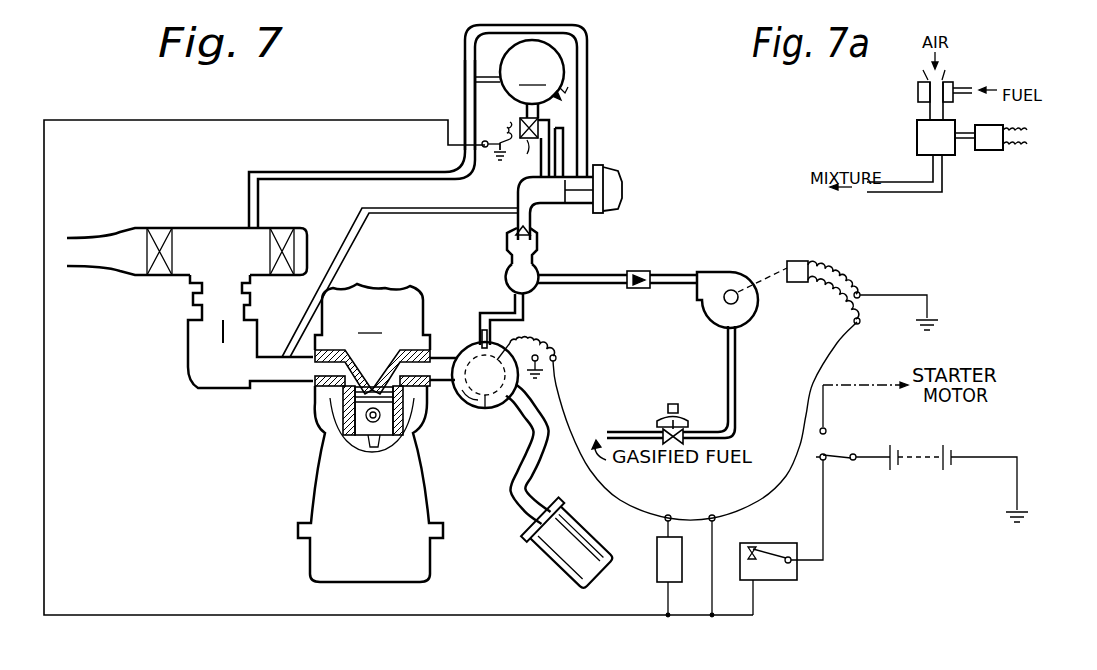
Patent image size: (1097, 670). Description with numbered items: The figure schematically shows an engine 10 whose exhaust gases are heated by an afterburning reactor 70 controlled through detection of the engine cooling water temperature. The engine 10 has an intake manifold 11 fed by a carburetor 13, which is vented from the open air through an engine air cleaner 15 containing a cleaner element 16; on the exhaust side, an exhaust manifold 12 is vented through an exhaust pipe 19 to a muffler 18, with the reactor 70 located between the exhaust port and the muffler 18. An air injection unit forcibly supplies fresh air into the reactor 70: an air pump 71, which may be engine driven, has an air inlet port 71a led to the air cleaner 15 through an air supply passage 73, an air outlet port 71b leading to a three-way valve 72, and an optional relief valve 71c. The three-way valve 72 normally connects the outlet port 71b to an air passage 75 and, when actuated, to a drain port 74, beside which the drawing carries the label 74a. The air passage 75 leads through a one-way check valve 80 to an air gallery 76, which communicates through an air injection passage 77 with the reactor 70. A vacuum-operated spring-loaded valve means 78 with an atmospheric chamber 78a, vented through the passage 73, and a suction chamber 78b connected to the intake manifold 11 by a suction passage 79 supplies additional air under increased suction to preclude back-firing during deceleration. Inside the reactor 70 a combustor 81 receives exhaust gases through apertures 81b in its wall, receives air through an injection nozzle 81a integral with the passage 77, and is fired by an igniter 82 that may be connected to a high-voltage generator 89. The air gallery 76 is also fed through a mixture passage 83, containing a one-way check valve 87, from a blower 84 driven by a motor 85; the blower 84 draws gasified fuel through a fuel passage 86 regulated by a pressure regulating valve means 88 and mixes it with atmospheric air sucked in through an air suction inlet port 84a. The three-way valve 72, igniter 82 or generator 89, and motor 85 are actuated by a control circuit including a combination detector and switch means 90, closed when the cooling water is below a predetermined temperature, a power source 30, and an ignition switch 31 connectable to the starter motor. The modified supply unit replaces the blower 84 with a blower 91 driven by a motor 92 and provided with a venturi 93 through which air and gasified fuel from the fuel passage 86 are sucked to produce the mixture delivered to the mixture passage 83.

In FIG. 7, the engine 10 is at (372, 317).
In FIG. 7, the intake manifold 11 is at (285, 387).
In FIG. 7, the exhaust manifold 12 is at (430, 340).
In FIG. 7, the carburetor 13 is at (187, 337).
In FIG. 7, the engine air cleaner 15 is at (200, 228).
In FIG. 7, the cleaner element 16 is at (150, 228).
In FIG. 7, the muffler 18 is at (549, 565).
In FIG. 7, the exhaust pipe 19 is at (510, 505).
In FIG. 7, the power source 30 is at (918, 466).
In FIG. 7, the ignition switch 31 is at (848, 462).
In FIG. 7, the afterburning reactor 70 is at (470, 425).
In FIG. 7, the air pump 71 is at (532, 79).
In FIG. 7, the air inlet port 71a is at (470, 90).
In FIG. 7, the air outlet port 71b is at (556, 97).
In FIG. 7, the relief valve 71c is at (565, 92).
In FIG. 7, the three-way valve 72 is at (541, 124).
In FIG. 7, the air supply passage 73 is at (398, 172).
In FIG. 7, the drain port 74 is at (530, 145).
In FIG. 7, the solenoid lead 74a is at (510, 145).
In FIG. 7, the air passage 75 is at (563, 145).
In FIG. 7, the air gallery 76 is at (538, 256).
In FIG. 7, the air injection passage 77 is at (494, 312).
In FIG. 7, the vacuum-operated spring-loaded valve means 78 is at (615, 168).
In FIG. 7, the atmospheric chamber 78a is at (583, 203).
In FIG. 7, the suction chamber 78b is at (622, 195).
In FIG. 7, the suction passage 79 is at (413, 214).
In FIG. 7, the one-way check valve 80 is at (508, 233).
In FIG. 7, the combustor 81 is at (490, 408).
In FIG. 7, the injection nozzle 81a is at (478, 340).
In FIG. 7, the apertures 81b is at (468, 398).
In FIG. 7, the igniter 82 is at (507, 338).
In FIG. 7, the mixture passage 83 is at (605, 284).
In FIG. 7A, the mixture passage 83 is at (913, 192).
In FIG. 7, the blower 84 is at (724, 272).
In FIG. 7, the air suction inlet port 84a is at (748, 303).
In FIG. 7, the motor 85 is at (806, 261).
In FIG. 7, the fuel passage 86 is at (737, 392).
In FIG. 7A, the fuel passage 86 is at (963, 83).
In FIG. 7, the one-way check valve 87 is at (640, 289).
In FIG. 7, the pressure regulating valve means 88 is at (670, 406).
In FIG. 7, the high-voltage generator 89 is at (797, 580).
In FIG. 7, the combination detector and switch means 90 is at (657, 549).
In FIG. 7A, the blower 91 is at (953, 157).
In FIG. 7A, the motor 92 is at (1002, 150).
In FIG. 7A, the venturi 93 is at (918, 92).